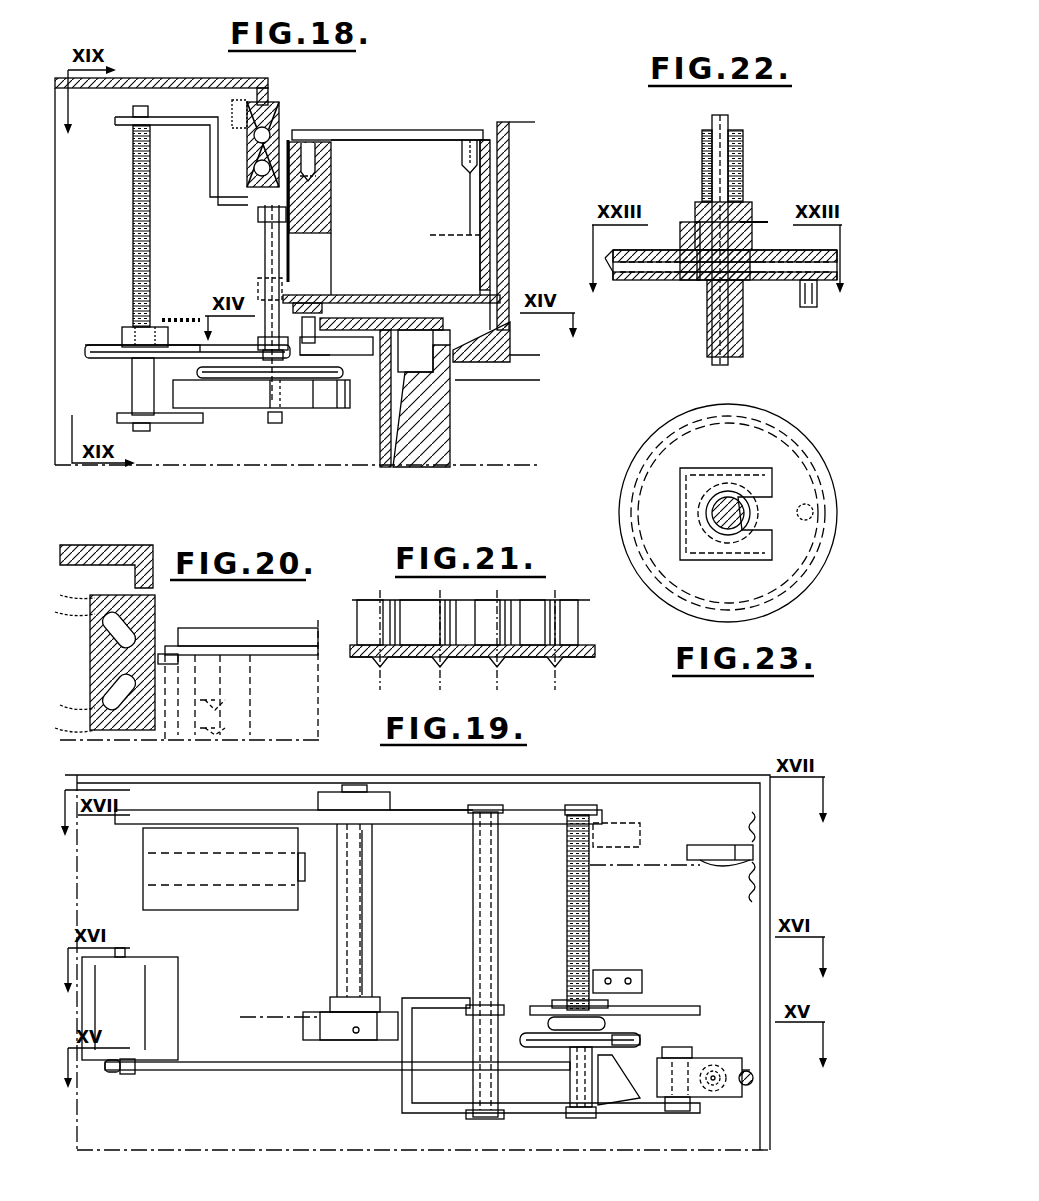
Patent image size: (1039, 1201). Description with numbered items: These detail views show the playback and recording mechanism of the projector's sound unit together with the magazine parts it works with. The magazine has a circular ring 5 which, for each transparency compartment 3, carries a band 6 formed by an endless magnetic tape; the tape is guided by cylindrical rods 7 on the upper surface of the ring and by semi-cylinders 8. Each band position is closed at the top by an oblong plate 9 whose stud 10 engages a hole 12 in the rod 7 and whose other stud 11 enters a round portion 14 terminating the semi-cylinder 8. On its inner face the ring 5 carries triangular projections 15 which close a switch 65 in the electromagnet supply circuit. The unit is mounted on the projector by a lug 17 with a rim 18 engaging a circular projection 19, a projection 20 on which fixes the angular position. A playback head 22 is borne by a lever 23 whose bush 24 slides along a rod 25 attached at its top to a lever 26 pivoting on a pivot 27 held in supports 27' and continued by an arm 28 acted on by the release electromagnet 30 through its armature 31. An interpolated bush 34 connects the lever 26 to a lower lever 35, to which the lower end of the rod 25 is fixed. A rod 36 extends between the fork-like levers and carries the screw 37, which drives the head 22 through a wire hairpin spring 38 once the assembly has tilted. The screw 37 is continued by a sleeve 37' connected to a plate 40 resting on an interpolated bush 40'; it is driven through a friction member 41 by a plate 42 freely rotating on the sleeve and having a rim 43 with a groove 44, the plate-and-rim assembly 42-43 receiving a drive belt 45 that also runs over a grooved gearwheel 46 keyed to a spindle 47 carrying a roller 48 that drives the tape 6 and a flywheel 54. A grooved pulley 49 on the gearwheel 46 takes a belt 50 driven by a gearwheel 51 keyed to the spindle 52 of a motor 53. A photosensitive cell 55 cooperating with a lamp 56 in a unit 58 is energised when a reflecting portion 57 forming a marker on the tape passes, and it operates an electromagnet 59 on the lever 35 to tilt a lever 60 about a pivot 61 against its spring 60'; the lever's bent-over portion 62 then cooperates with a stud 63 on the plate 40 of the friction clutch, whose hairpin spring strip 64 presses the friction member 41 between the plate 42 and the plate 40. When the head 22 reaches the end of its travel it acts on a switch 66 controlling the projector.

In FIG. 18, the transparency compartment 3 is at (517, 122).
In FIG. 18, the circular ring 5 is at (445, 235).
In FIG. 21, the circular ring 5 is at (405, 658).
In FIG. 18, the band 6 is at (392, 158).
In FIG. 20, the band 6 is at (285, 668).
In FIG. 18, the cylindrical rod 7 is at (322, 206).
In FIG. 21, the cylindrical rod 7 is at (560, 611).
In FIG. 18, the semi-cylinder 8 is at (489, 197).
In FIG. 18, the oblong plate 9 is at (372, 131).
In FIG. 18, the stud 10 is at (306, 150).
In FIG. 18, the stud 11 is at (466, 160).
In FIG. 18, the hole 12 is at (306, 178).
In FIG. 18, the round portion 14 is at (462, 146).
In FIG. 18, the projection 15 is at (350, 305).
In FIG. 21, the projection 15 is at (555, 660).
In FIG. 18, the lug 17 is at (398, 300).
In FIG. 18, the rim 18 is at (452, 298).
In FIG. 18, the circular projection 19 is at (433, 360).
In FIG. 18, the projection 20 is at (438, 338).
In FIG. 18, the playback head 22 is at (262, 282).
In FIG. 19, the playback head 22 is at (625, 970).
In FIG. 18, the lever 23 is at (185, 318).
In FIG. 19, the lever 23 is at (650, 1008).
In FIG. 19, the bush 24 is at (470, 975).
In FIG. 19, the rod 25 is at (480, 883).
In FIG. 18, the lever 26 is at (173, 116).
In FIG. 19, the lever 26 is at (452, 815).
In FIG. 19, the pivot 27 is at (324, 904).
In FIG. 19, the support 27' is at (320, 890).
In FIG. 19, the arm 28 is at (177, 818).
In FIG. 19, the release electromagnet 30 is at (190, 905).
In FIG. 19, the armature 31 is at (305, 875).
In FIG. 19, the interpolated bush 34 is at (373, 914).
In FIG. 18, the lever 35 is at (165, 424).
In FIG. 19, the lever 35 is at (405, 1108).
In FIG. 18, the rod 36 is at (140, 102).
In FIG. 22, the rod 36 is at (712, 120).
In FIG. 23, the rod 36 is at (728, 528).
In FIG. 19, the rod 36 is at (582, 806).
In FIG. 18, the screw 37 is at (112, 226).
In FIG. 22, the screw 37 is at (747, 164).
In FIG. 19, the screw 37 is at (559, 912).
In FIG. 22, the sleeve 37' is at (749, 200).
In FIG. 23, the sleeve 37' is at (665, 513).
In FIG. 19, the wire hairpin spring 38 is at (555, 1000).
In FIG. 22, the plate 40 is at (711, 282).
In FIG. 18, the interpolated bush 40' is at (116, 386).
In FIG. 22, the interpolated bush 40' is at (755, 318).
In FIG. 19, the interpolated bush 40' is at (551, 1077).
In FIG. 22, the friction member 41 is at (672, 282).
In FIG. 22, the plate 42 is at (652, 280).
In FIG. 22, the rim 43 is at (620, 282).
In FIG. 18, the plate and rim 42-43 is at (86, 345).
In FIG. 23, the plate and rim 42-43 is at (648, 450).
In FIG. 19, the plate and rim 42-43 is at (520, 1038).
In FIG. 22, the groove 44 is at (613, 268).
In FIG. 18, the drive belt 45 is at (86, 348).
In FIG. 19, the drive belt 45 is at (640, 1040).
In FIG. 18, the grooved gearwheel 46 is at (262, 340).
In FIG. 18, the spindle 47 is at (265, 242).
In FIG. 18, the roller 48 is at (258, 215).
In FIG. 18, the grooved pulley 49 is at (250, 380).
In FIG. 18, the belt 50 is at (242, 378).
In FIG. 19, the belt 50 is at (240, 1071).
In FIG. 19, the gearwheel 51 is at (132, 1075).
In FIG. 19, the spindle 52 is at (118, 1075).
In FIG. 19, the motor 53 is at (170, 972).
In FIG. 18, the flywheel 54 is at (194, 405).
In FIG. 18, the photosensitive cell 55 is at (254, 128).
In FIG. 20, the photosensitive cell 55 is at (132, 628).
In FIG. 18, the lamp 56 is at (254, 175).
In FIG. 20, the lamp 56 is at (133, 702).
In FIG. 18, the reflecting portion 57 is at (290, 142).
In FIG. 20, the reflecting portion 57 is at (178, 657).
In FIG. 18, the unit 58 is at (248, 148).
In FIG. 20, the unit 58 is at (100, 665).
In FIG. 19, the electromagnet 59 is at (725, 1050).
In FIG. 19, the lever 60 is at (691, 1097).
In FIG. 19, the spring 60' is at (727, 1027).
In FIG. 19, the pivot 61 is at (685, 1112).
In FIG. 19, the bent-over portion 62 is at (620, 1088).
In FIG. 22, the stud 63 is at (800, 297).
In FIG. 23, the stud 63 is at (800, 510).
In FIG. 19, the stud 63 is at (600, 1108).
In FIG. 18, the hairpin spring strip 64 is at (122, 338).
In FIG. 22, the hairpin spring strip 64 is at (690, 240).
In FIG. 23, the hairpin spring strip 64 is at (706, 476).
In FIG. 19, the hairpin spring strip 64 is at (556, 1024).
In FIG. 18, the switch 65 is at (340, 348).
In FIG. 19, the switch 66 is at (710, 855).